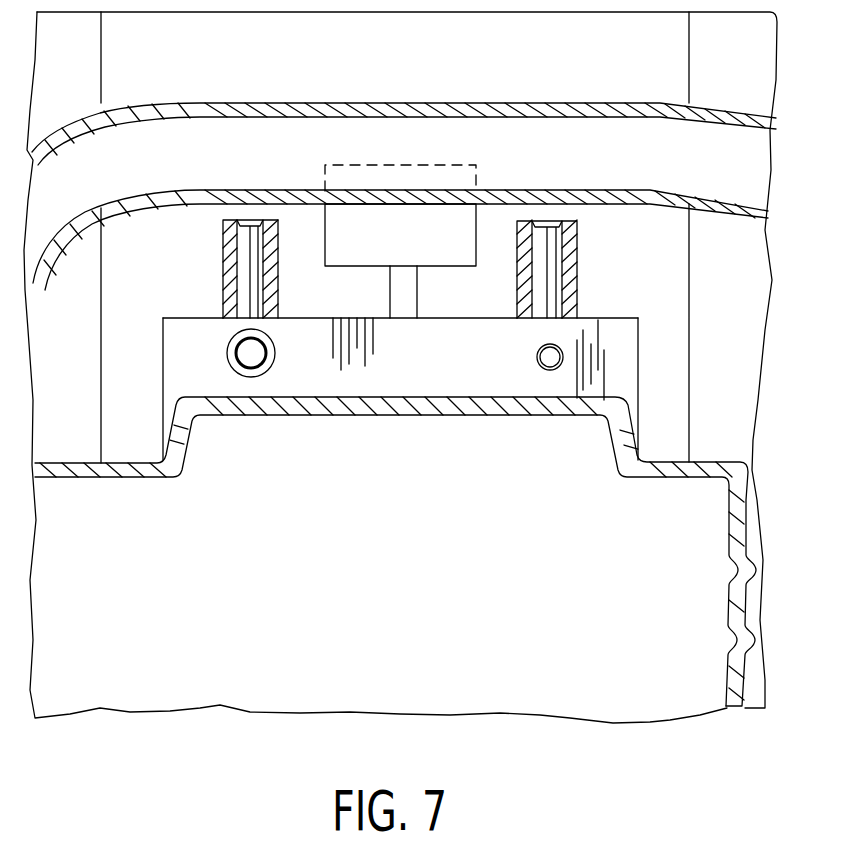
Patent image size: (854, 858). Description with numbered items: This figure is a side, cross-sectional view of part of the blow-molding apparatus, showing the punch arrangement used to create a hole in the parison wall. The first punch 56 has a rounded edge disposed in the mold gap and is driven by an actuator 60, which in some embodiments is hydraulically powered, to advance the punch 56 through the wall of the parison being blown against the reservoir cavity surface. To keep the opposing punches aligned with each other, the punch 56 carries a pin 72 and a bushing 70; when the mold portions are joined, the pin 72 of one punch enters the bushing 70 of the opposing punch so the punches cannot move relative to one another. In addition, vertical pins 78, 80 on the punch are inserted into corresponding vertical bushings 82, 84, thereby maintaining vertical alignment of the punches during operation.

The first punch 56 is at (393, 373).
The actuator 60 is at (478, 238).
The bushing 70 is at (228, 353).
The pin 72 is at (538, 355).
The vertical pin 78 is at (250, 276).
The vertical pin 80 is at (550, 293).
The vertical bushing 82 is at (222, 246).
The vertical bushing 84 is at (565, 254).